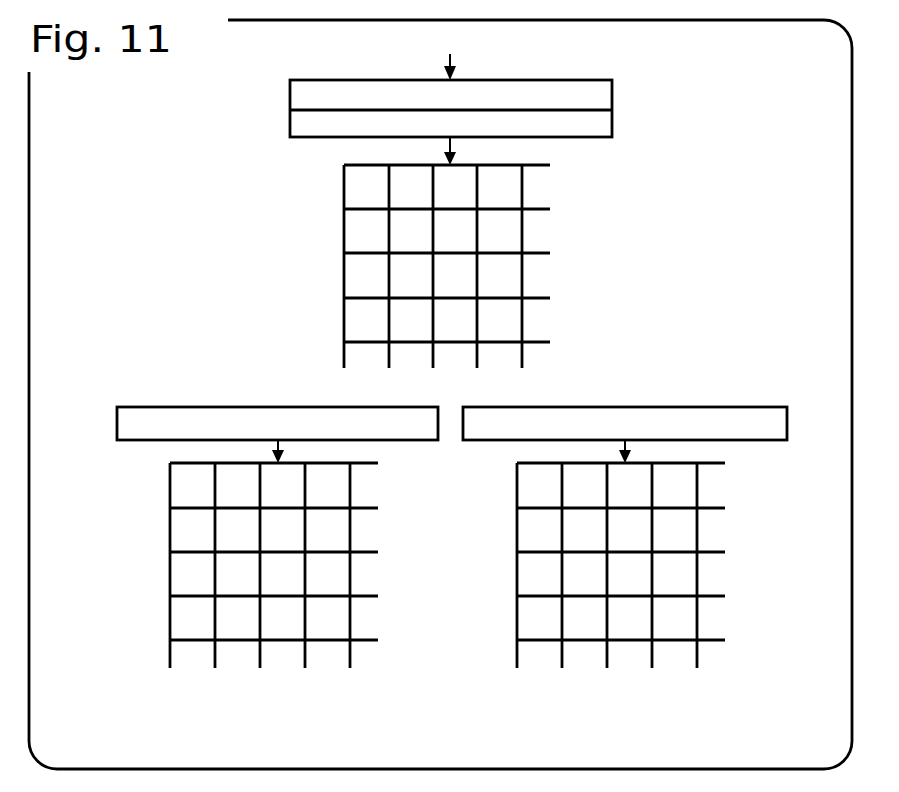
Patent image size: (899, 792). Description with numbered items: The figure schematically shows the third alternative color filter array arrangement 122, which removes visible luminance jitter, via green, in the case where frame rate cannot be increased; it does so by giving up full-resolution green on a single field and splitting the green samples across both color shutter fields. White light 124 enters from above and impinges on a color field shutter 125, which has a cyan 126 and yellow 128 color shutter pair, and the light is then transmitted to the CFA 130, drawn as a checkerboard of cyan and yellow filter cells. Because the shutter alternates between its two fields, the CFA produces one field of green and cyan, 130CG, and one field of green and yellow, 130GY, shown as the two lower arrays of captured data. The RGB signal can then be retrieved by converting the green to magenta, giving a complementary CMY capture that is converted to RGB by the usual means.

The third alternative CFA arrangement 122 is at (168, 198).
The white light 124 is at (483, 39).
The color field shutter 125 is at (673, 148).
The cyan color shutter 126 is at (553, 79).
The yellow color shutter 128 is at (555, 138).
The CFA 130 is at (673, 310).
The field of G and C 130CG is at (116, 597).
The field of G and Y 130GY is at (782, 597).